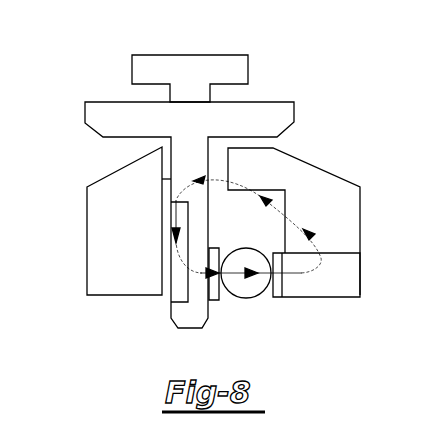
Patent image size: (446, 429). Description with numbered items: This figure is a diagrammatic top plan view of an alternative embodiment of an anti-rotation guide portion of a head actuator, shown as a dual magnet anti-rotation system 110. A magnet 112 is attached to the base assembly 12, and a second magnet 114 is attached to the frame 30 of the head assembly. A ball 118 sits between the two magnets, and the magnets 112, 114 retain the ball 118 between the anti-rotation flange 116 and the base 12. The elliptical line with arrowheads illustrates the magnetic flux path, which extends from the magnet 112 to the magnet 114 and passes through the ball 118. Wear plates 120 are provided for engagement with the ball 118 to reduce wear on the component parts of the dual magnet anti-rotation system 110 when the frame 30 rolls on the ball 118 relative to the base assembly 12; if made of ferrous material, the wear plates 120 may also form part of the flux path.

The dual magnet anti-rotation system 110 is at (207, 170).
The frame 30 is at (286, 111).
The base assembly 12 is at (342, 212).
The magnet 112 is at (352, 285).
The magnet 114 is at (175, 271).
The anti-rotation flange 116 is at (171, 179).
The ball 118 is at (248, 298).
The wear plates 120 is at (223, 249).